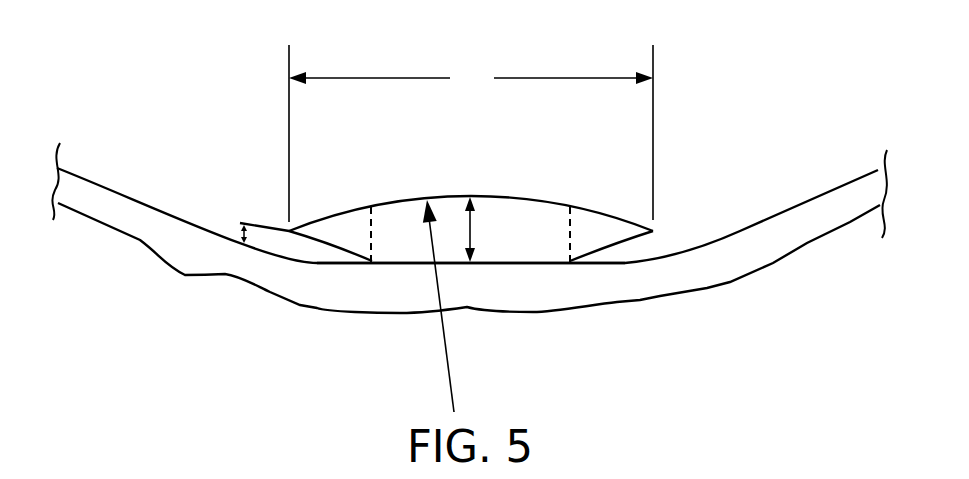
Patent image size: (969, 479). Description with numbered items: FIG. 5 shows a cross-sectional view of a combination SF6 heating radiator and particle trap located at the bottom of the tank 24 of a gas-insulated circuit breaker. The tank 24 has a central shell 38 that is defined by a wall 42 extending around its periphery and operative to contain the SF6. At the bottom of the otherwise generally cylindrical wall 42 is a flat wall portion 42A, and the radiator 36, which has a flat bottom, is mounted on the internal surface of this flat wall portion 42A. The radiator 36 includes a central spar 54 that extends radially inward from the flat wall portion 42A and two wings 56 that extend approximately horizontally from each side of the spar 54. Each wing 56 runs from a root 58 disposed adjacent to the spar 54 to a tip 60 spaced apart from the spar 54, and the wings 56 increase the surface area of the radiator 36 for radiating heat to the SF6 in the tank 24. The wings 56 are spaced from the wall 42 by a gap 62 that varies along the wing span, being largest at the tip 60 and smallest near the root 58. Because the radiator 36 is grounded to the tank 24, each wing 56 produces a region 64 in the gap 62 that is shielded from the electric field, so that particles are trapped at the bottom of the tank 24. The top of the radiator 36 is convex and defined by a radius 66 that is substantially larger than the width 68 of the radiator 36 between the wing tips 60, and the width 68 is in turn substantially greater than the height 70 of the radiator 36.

The tank 24 is at (721, 359).
The radiator 36 is at (721, 74).
The central shell 38 is at (883, 209).
The wall 42 is at (110, 190).
The flat wall portion 42A is at (495, 262).
The central spar 54 is at (485, 197).
The wings 56 is at (312, 233).
The wing root portion 58 is at (370, 207).
The wing tip portion 60 is at (288, 228).
The gap 62 is at (243, 232).
The region 64 is at (325, 258).
The radius 66 is at (449, 372).
The width 68 is at (471, 133).
The height 70 is at (478, 234).